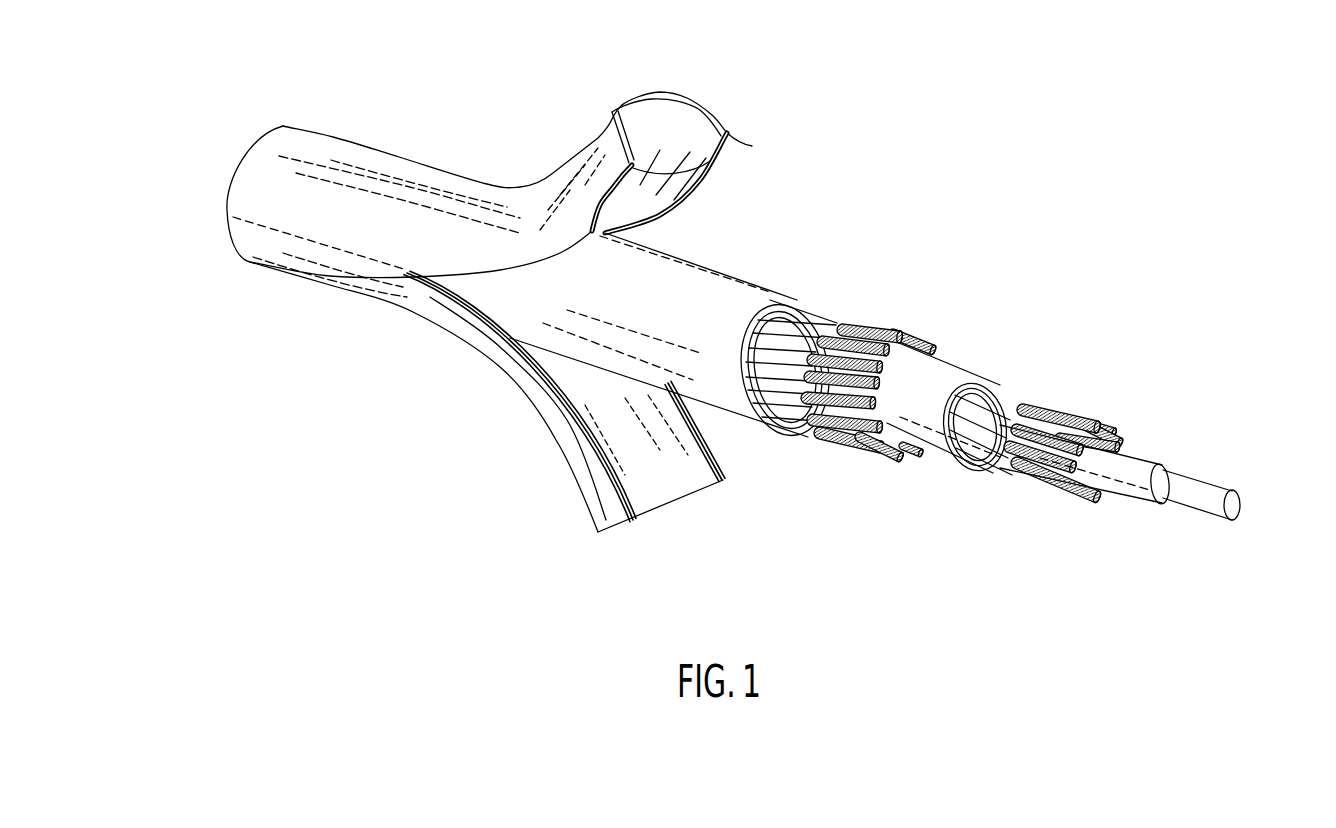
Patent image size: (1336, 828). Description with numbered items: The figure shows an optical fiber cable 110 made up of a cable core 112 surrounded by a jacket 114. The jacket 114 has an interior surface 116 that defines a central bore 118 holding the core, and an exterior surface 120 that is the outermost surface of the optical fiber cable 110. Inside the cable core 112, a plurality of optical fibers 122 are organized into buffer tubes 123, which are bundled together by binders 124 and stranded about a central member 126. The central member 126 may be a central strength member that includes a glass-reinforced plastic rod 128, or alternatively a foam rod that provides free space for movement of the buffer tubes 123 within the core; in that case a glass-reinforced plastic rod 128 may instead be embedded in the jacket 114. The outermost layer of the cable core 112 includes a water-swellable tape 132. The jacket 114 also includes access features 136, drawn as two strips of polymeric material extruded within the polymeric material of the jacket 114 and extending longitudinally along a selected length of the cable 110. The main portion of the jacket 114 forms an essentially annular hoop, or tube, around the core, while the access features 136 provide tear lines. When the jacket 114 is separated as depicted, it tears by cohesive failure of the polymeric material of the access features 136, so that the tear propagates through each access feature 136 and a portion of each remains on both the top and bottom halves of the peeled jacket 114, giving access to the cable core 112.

The optical fiber cable 110 is at (474, 470).
The cable core 112 is at (802, 263).
The jacket 114 is at (368, 128).
The interior surface 116 is at (680, 483).
The central bore 118 is at (480, 288).
The exterior surface 120 is at (392, 173).
The optical fibers 122 is at (903, 322).
The buffer tubes 123 is at (847, 316).
The binders 124 is at (790, 318).
The central member 126 is at (1207, 432).
The glass-reinforced plastic rod 128 is at (1200, 491).
The water-swellable tape 132 is at (710, 300).
The access feature 136 is at (232, 216).